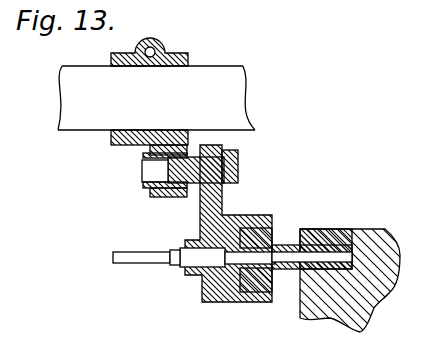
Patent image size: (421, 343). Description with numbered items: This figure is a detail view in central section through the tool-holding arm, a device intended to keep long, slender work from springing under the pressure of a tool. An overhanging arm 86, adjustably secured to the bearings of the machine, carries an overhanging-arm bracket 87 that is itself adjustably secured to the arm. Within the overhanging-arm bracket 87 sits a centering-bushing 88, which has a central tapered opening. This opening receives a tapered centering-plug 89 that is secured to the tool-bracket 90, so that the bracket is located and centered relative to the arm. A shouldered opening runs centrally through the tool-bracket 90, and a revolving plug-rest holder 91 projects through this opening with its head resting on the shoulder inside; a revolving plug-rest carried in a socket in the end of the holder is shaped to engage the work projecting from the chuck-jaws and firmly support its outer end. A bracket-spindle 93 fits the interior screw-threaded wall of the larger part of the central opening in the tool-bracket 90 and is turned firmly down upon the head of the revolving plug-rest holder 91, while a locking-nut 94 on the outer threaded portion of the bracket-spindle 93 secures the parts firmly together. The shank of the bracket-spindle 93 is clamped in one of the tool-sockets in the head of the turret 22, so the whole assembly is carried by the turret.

The turret 22 is at (352, 223).
The overhanging arm 86 is at (60, 96).
The overhanging-arm bracket 87 is at (186, 63).
The centering-bushing 88 is at (143, 160).
The tapered centering-plug 89 is at (238, 170).
The tool-bracket 90 is at (222, 201).
The revolving plug-rest holder 91 is at (198, 242).
The bracket-spindle 93 is at (285, 242).
The locking-nut 94 is at (265, 292).